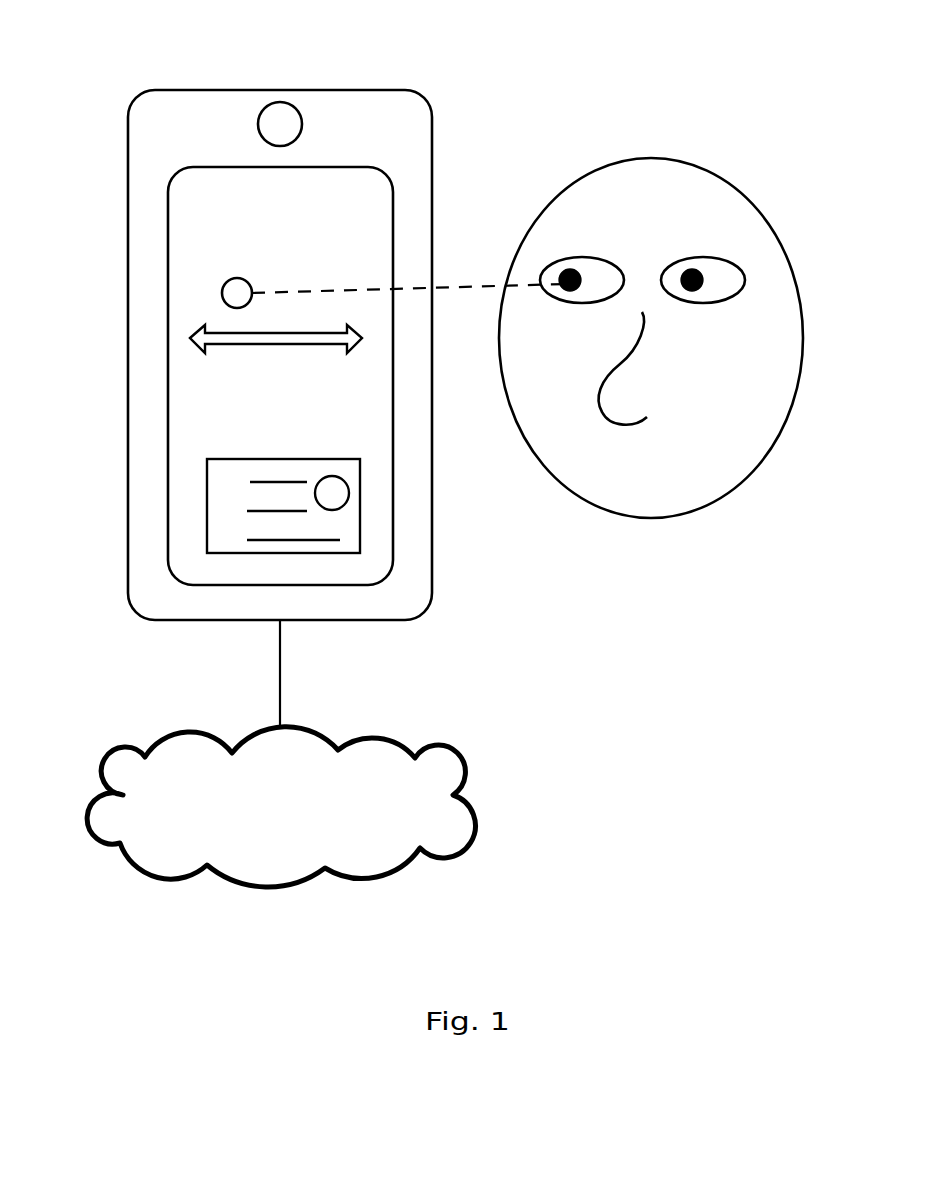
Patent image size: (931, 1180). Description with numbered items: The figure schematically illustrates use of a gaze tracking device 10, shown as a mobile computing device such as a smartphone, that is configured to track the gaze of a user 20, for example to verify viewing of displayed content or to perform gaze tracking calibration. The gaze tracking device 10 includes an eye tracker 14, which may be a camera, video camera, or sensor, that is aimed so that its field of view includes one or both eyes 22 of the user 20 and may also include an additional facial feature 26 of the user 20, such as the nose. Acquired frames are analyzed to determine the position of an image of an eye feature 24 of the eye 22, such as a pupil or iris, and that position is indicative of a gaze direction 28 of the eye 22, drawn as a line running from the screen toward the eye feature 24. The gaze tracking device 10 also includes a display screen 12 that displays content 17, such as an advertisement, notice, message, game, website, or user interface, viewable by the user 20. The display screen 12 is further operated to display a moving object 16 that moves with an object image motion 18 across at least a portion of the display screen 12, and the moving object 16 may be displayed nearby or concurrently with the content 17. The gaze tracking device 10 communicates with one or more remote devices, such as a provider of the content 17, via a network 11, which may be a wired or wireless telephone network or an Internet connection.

The gaze tracking device 10 is at (172, 88).
The network 11 is at (408, 742).
The display screen 12 is at (170, 237).
The eye tracker 14 is at (292, 106).
The moving object 16 is at (235, 282).
The content 17 is at (205, 502).
The object image motion 18 is at (280, 345).
The user 20 is at (683, 158).
The eye 22 is at (577, 257).
The eye feature 24 is at (558, 277).
The facial feature 26 is at (602, 380).
The gaze direction 28 is at (373, 290).